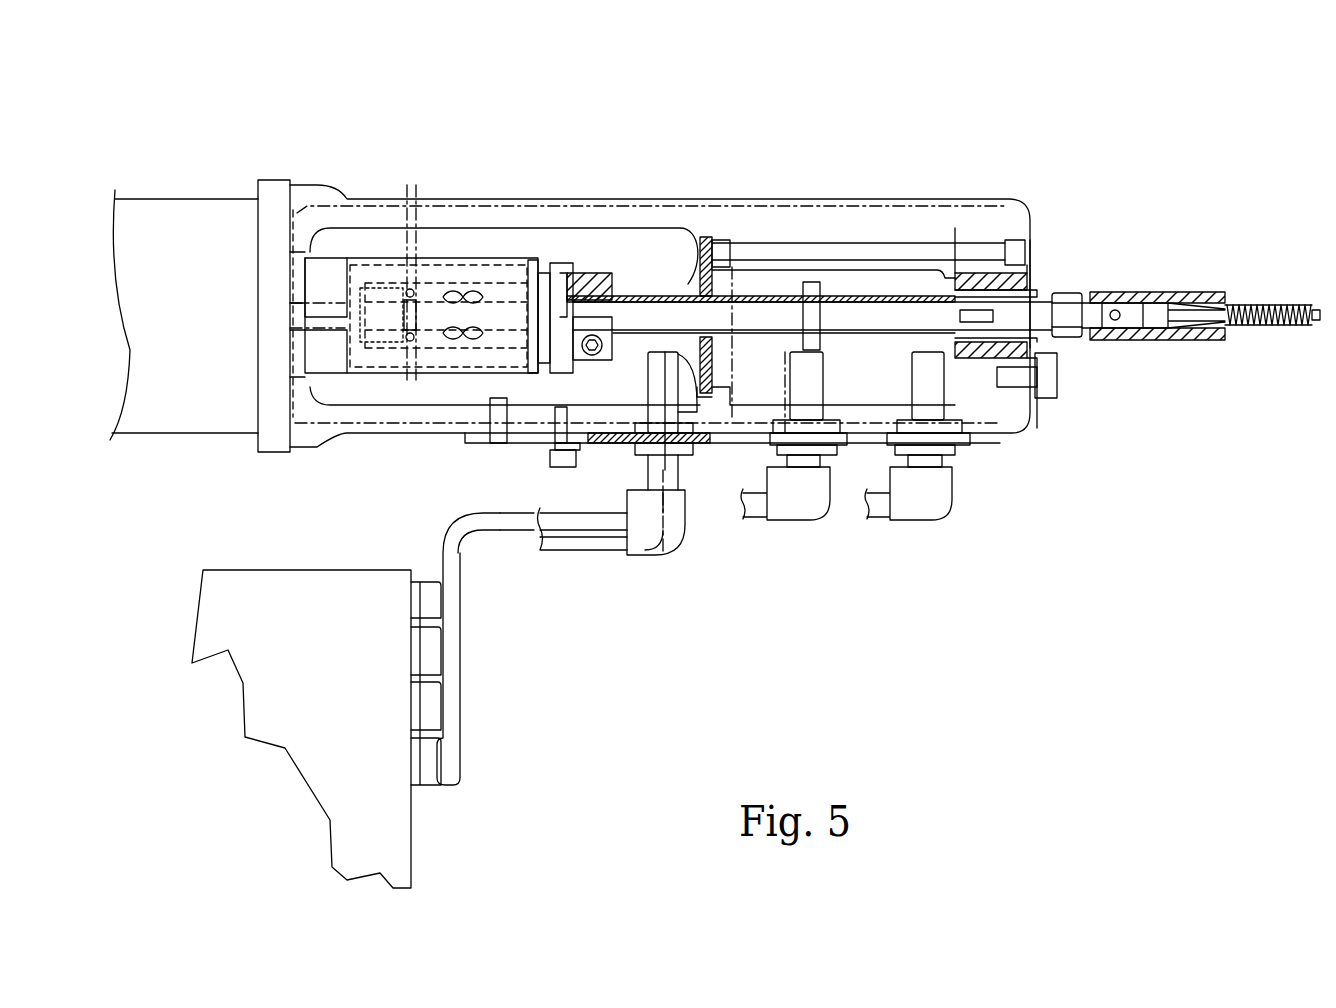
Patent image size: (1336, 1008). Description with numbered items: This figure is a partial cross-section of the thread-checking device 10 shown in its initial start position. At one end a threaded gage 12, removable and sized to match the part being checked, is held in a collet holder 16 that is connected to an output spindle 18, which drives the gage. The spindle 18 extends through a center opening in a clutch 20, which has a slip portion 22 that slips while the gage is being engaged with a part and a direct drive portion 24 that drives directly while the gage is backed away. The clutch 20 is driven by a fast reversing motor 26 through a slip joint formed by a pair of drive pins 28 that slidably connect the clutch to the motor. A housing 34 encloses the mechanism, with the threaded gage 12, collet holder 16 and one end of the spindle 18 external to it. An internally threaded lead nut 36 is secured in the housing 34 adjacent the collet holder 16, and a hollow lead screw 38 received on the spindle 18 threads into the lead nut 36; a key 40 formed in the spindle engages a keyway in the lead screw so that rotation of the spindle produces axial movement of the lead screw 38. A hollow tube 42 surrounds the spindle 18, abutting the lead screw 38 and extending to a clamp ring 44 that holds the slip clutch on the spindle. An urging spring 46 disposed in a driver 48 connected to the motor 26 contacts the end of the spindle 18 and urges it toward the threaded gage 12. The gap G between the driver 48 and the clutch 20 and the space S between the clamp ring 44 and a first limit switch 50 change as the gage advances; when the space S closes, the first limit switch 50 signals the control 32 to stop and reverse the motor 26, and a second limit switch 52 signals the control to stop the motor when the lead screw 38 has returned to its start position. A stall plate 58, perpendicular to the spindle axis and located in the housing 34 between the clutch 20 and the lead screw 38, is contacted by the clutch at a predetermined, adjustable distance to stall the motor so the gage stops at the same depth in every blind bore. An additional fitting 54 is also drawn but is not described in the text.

The device 10 is at (663, 103).
The threaded gage 12 is at (1270, 303).
The collet holder 16 is at (1190, 340).
The output spindle 18 is at (777, 313).
The clutch 20 is at (512, 258).
The slip portion 22 is at (555, 262).
The direct drive portion 24 is at (475, 260).
The fast reversing motor 26 is at (185, 228).
The drive pins 28 is at (447, 260).
The control 32 is at (283, 592).
The housing 34 is at (987, 202).
The lead nut 36 is at (1027, 277).
The lead screw 38 is at (883, 242).
The key 40 is at (978, 324).
The hollow tube 42 is at (733, 270).
The clamp ring 44 is at (600, 265).
The urging spring 46 is at (365, 283).
The driver 48 is at (388, 265).
The first limit switch 50 is at (694, 433).
The second limit switch 52 is at (820, 354).
The pneumatic fitting 54 is at (944, 354).
The stall plate 58 is at (694, 433).
The gap G is at (393, 190).
The space S is at (575, 350).